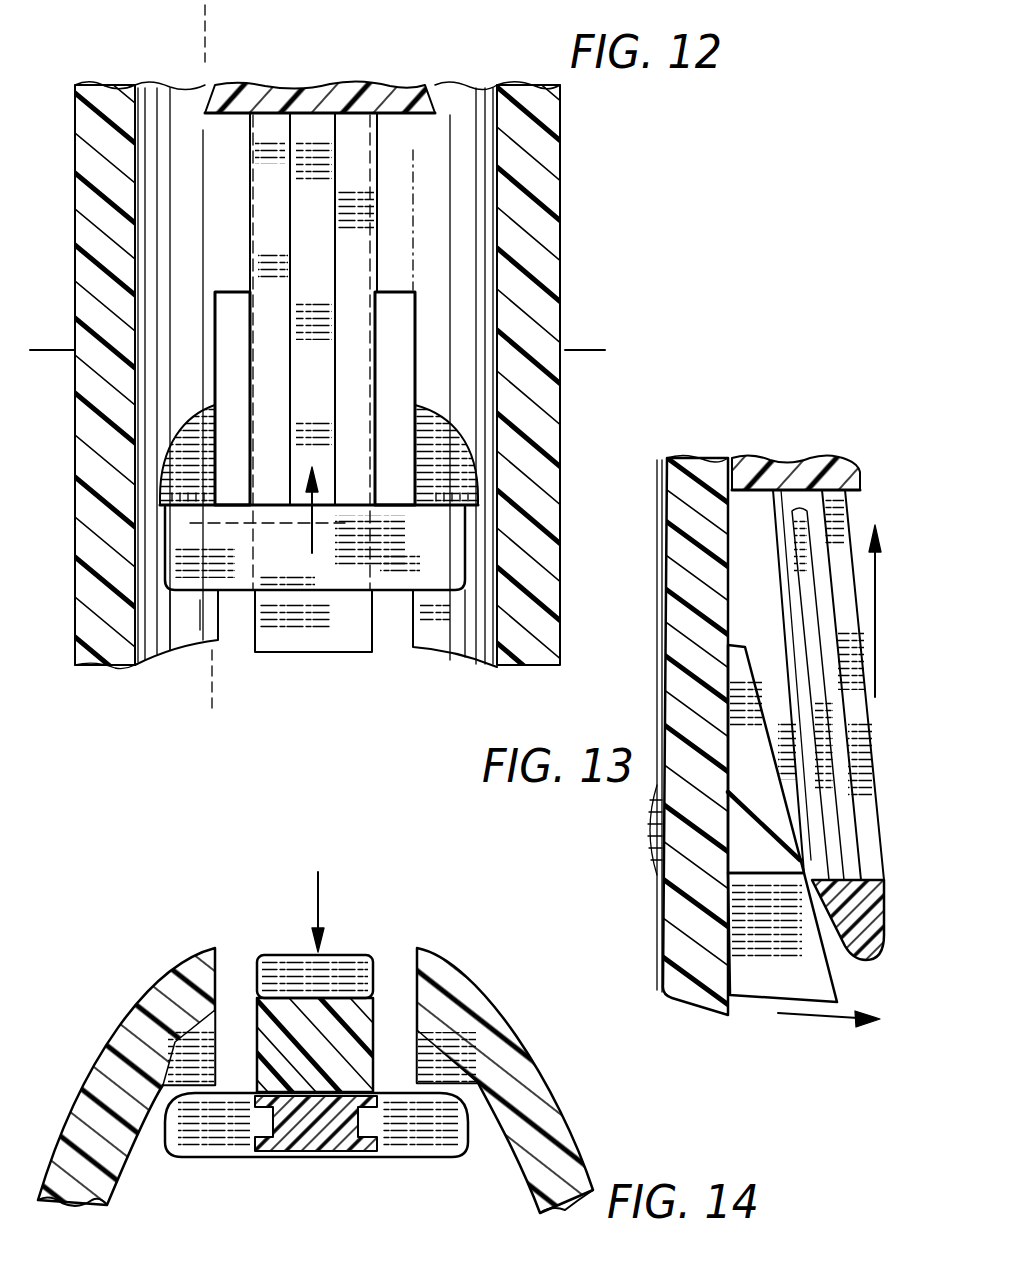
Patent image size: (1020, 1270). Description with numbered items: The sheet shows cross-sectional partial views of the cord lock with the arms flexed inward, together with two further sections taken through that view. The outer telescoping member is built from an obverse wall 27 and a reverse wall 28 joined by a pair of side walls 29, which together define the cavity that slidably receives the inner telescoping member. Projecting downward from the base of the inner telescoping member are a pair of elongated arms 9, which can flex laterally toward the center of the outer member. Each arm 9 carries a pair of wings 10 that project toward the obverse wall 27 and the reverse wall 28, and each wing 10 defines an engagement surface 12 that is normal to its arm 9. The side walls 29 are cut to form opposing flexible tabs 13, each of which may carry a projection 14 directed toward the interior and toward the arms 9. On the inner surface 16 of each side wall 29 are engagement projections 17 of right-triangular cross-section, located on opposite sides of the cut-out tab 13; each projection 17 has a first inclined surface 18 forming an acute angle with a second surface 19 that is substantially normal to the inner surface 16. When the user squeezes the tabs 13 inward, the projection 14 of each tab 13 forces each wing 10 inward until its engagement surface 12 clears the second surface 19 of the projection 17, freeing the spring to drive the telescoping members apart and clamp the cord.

In FIG. 12, the arm 9 is at (350, 140).
In FIG. 13, the arm 9 is at (800, 763).
In FIG. 14, the arm 9 is at (318, 1145).
In FIG. 12, the wing 10 is at (233, 583).
In FIG. 13, the wing 10 is at (860, 910).
In FIG. 14, the wing 10 is at (212, 1147).
In FIG. 13, the engagement surface 12 is at (850, 870).
In FIG. 12, the tab 13 is at (192, 30).
In FIG. 14, the tab 13 is at (348, 967).
In FIG. 12, the projection 14 is at (42, 330).
In FIG. 13, the projection 14 is at (833, 973).
In FIG. 12, the inner surface 16 is at (467, 98).
In FIG. 12, the engagement projection 17 is at (200, 497).
In FIG. 13, the engagement projection 17 is at (748, 833).
In FIG. 14, the engagement projection 17 is at (217, 1047).
In FIG. 13, the first inclined surface 18 is at (745, 778).
In FIG. 13, the second surface 19 is at (775, 875).
In FIG. 12, the obverse wall 27 is at (83, 378).
In FIG. 12, the reverse wall 28 is at (548, 198).
In FIG. 13, the side wall 29 is at (677, 502).